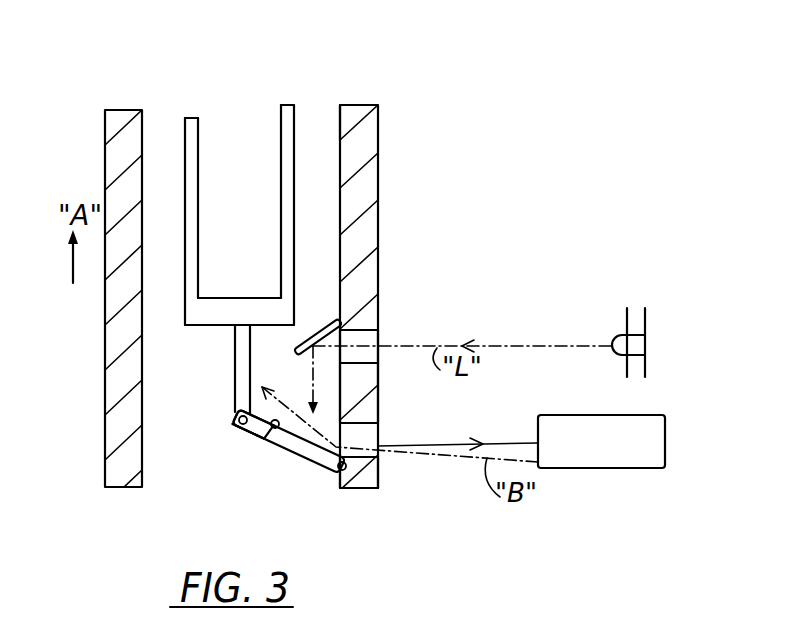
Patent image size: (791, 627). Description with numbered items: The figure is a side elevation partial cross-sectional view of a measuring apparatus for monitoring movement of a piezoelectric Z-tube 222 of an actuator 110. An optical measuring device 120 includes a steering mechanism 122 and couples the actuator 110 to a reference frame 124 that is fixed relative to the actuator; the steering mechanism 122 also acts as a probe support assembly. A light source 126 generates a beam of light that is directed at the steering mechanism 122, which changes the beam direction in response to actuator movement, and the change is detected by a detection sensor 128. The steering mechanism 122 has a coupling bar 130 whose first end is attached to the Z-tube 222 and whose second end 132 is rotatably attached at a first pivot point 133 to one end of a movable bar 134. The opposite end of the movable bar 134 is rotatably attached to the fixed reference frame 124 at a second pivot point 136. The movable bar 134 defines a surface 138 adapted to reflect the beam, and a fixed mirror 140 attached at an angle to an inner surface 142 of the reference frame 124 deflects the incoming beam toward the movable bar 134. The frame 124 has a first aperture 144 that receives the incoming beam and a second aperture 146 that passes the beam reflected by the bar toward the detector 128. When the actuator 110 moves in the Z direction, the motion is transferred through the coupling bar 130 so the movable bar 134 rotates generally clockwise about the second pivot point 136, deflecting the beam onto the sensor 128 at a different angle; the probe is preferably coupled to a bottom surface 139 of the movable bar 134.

The actuator 110 is at (289, 40).
The piezoelectric Z-tube 222 is at (205, 113).
The reference frame 124 is at (377, 138).
The inner surface 142 is at (339, 123).
The first aperture 144 is at (396, 332).
The steering mechanism 122 is at (348, 396).
The second aperture 146 is at (388, 465).
The fixed mirror 140 is at (333, 322).
The coupling bar 130 is at (235, 345).
The second end 132 is at (238, 412).
The first pivot point 133 is at (239, 423).
The movable bar 134 is at (292, 457).
The second pivot point 136 is at (340, 471).
The surface 138 is at (270, 440).
The bottom surface 139 is at (245, 432).
The optical measuring device 120 is at (595, 321).
The light source 126 is at (613, 352).
The detection sensor 128 is at (593, 468).